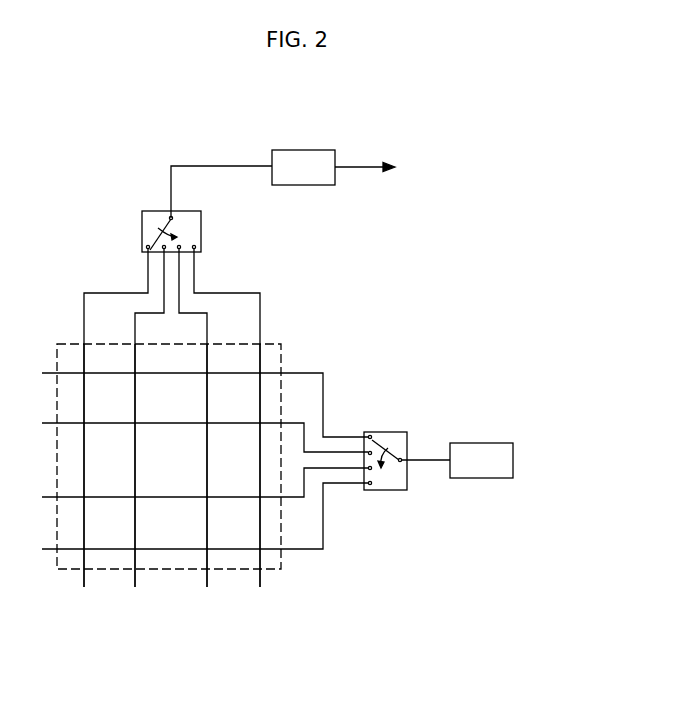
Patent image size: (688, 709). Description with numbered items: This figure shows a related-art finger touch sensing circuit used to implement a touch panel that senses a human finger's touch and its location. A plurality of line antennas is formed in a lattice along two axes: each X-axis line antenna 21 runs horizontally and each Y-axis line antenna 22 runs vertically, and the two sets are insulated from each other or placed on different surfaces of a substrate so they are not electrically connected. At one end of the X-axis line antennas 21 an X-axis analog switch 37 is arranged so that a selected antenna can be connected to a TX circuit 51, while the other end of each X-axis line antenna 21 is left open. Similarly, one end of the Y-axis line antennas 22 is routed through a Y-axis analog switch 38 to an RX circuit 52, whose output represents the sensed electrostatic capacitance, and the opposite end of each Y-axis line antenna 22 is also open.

The X-axis line antenna 21 is at (162, 549).
The Y-axis line antenna 22 is at (207, 525).
The X-axis analog switch 37 is at (383, 490).
The Y-axis analog switch 38 is at (201, 233).
The TX circuit 51 is at (482, 478).
The RX circuit 52 is at (306, 150).